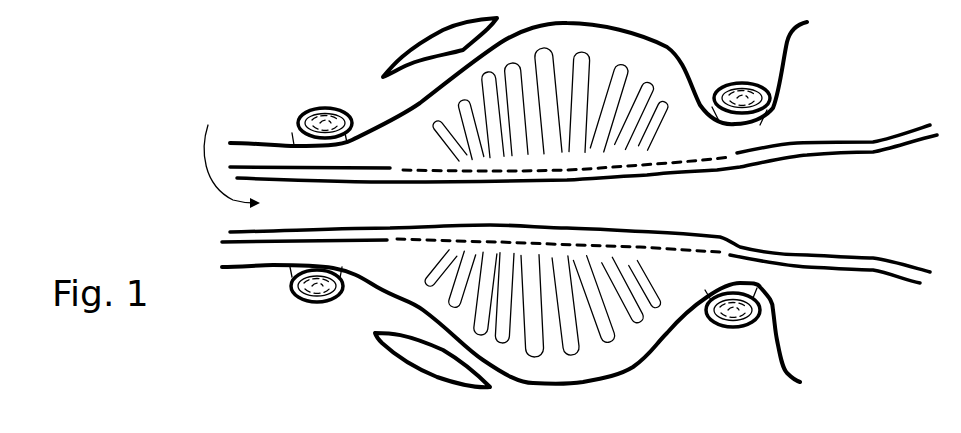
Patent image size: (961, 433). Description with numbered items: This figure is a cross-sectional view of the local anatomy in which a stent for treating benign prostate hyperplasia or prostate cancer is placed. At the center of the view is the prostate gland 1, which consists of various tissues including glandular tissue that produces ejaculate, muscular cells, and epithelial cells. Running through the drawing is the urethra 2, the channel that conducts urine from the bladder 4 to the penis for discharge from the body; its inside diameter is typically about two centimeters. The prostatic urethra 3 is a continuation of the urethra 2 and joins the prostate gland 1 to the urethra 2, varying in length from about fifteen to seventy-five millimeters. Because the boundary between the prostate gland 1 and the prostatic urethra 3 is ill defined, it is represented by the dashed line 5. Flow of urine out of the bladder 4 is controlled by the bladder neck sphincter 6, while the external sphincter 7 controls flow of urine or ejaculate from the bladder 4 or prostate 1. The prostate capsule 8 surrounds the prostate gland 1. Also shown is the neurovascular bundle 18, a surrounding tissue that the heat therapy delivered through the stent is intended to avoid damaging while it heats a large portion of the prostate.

The prostate gland 1 is at (657, 31).
The urethra 2 is at (231, 155).
The prostatic urethra 3 is at (657, 232).
The bladder 4 is at (860, 199).
The dashed line 5 is at (472, 235).
The bladder neck sphincter 6 is at (744, 92).
The external sphincter 7 is at (328, 110).
The prostate capsule 8 is at (673, 333).
The neurovascular bundle 18 is at (410, 50).